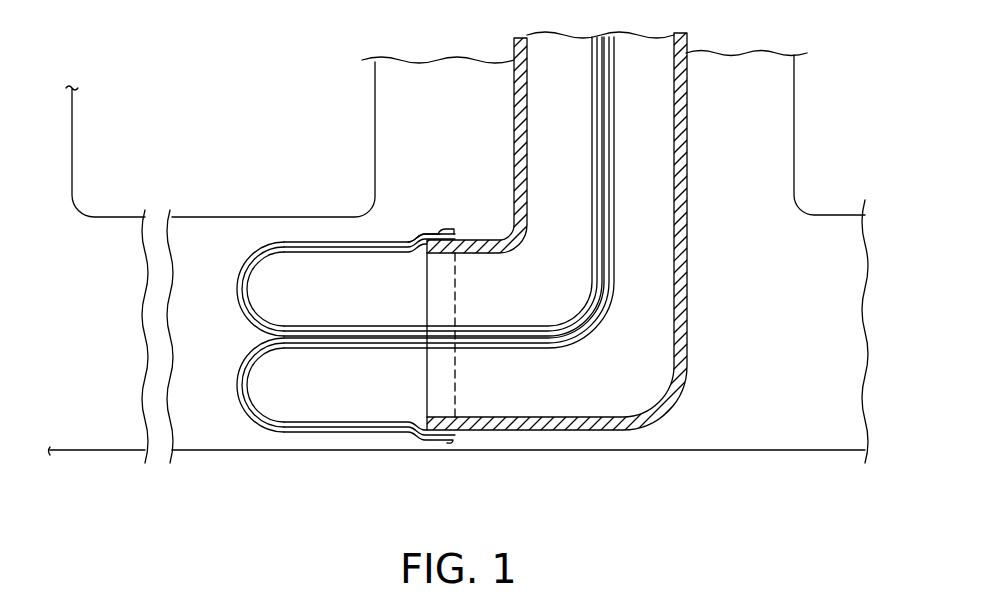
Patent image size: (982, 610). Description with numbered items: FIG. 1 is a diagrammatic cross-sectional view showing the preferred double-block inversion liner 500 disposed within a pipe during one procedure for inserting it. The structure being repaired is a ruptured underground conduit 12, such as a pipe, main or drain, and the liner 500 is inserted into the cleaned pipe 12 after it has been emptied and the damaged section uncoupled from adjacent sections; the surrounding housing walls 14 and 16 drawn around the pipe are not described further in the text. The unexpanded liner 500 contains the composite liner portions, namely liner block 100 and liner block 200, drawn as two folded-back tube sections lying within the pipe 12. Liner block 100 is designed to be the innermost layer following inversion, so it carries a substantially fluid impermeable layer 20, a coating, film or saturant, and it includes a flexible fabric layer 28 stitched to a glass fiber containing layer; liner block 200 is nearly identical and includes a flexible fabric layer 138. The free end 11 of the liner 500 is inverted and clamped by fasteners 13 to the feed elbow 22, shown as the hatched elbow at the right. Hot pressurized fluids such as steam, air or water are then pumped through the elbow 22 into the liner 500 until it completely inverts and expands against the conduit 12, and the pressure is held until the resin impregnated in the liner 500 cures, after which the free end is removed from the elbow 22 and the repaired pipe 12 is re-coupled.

The free end 11 is at (412, 231).
The underground conduit 12 is at (258, 452).
The fasteners 13 is at (452, 229).
The housing wall 14 is at (375, 131).
The housing wall 16 is at (72, 132).
The substantially fluid impermeable layer 20 is at (388, 186).
The feed elbow 22 is at (686, 152).
The flexible fabric layer 28 is at (335, 255).
The liner block 100 is at (250, 313).
The flexible fabric layer 138 is at (245, 263).
The liner block 200 is at (252, 280).
The inversion liner 500 is at (252, 341).